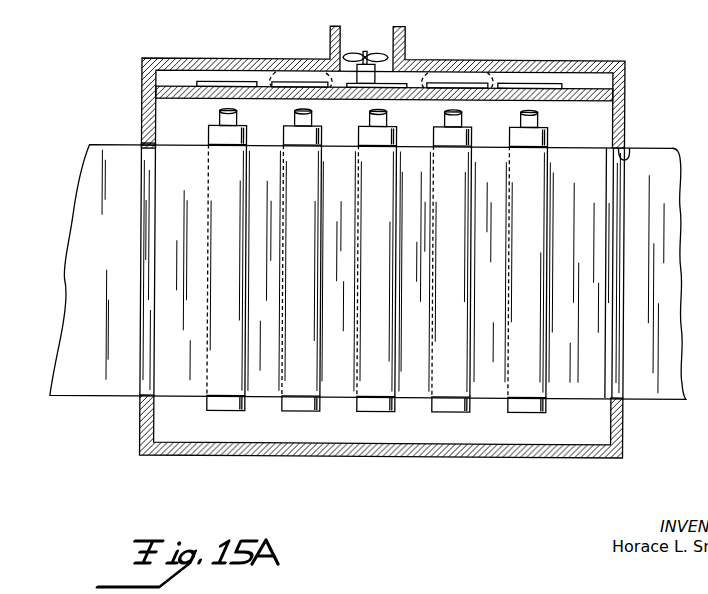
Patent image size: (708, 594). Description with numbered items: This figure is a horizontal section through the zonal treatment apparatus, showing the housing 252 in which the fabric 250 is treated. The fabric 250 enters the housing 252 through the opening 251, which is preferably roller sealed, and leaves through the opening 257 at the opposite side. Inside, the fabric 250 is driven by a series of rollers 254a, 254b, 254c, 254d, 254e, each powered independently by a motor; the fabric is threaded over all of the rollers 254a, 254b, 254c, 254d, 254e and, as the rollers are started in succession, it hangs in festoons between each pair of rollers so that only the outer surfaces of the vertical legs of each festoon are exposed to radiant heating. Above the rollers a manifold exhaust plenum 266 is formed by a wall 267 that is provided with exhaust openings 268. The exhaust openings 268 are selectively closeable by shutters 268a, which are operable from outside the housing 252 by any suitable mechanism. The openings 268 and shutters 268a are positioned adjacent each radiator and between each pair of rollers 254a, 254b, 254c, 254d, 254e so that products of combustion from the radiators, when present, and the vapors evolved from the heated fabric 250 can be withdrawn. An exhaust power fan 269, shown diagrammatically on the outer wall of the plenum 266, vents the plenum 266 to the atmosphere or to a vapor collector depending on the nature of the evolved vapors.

The fabric 250 is at (118, 258).
The opening 251 is at (140, 146).
The housing 252 is at (158, 58).
The roller 254a is at (252, 120).
The roller 254b is at (318, 128).
The roller 254c is at (395, 128).
The roller 254d is at (471, 129).
The roller 254e is at (542, 131).
The opening 257 is at (627, 148).
The manifold exhaust plenum 266 is at (597, 78).
The wall 267 is at (608, 90).
The exhaust openings 268 is at (313, 53).
The shutters 268a is at (225, 80).
The exhaust power fan 269 is at (375, 50).